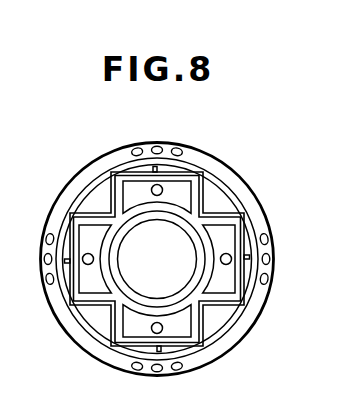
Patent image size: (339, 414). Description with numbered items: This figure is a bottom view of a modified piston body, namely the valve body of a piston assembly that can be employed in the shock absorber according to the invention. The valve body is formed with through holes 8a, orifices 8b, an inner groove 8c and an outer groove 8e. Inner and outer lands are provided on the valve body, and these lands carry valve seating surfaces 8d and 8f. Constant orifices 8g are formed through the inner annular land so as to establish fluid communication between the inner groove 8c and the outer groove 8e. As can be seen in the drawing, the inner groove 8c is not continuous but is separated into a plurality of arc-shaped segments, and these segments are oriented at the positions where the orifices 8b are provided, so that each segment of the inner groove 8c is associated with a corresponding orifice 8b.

The through holes 8a is at (268, 233).
The orifices 8b is at (217, 253).
The inner groove 8c is at (128, 197).
The valve seating surface of inner land 8d is at (148, 178).
The outer groove 8e is at (142, 348).
The valve seating surface of outer land 8f is at (247, 295).
The constant orifices 8g is at (150, 180).